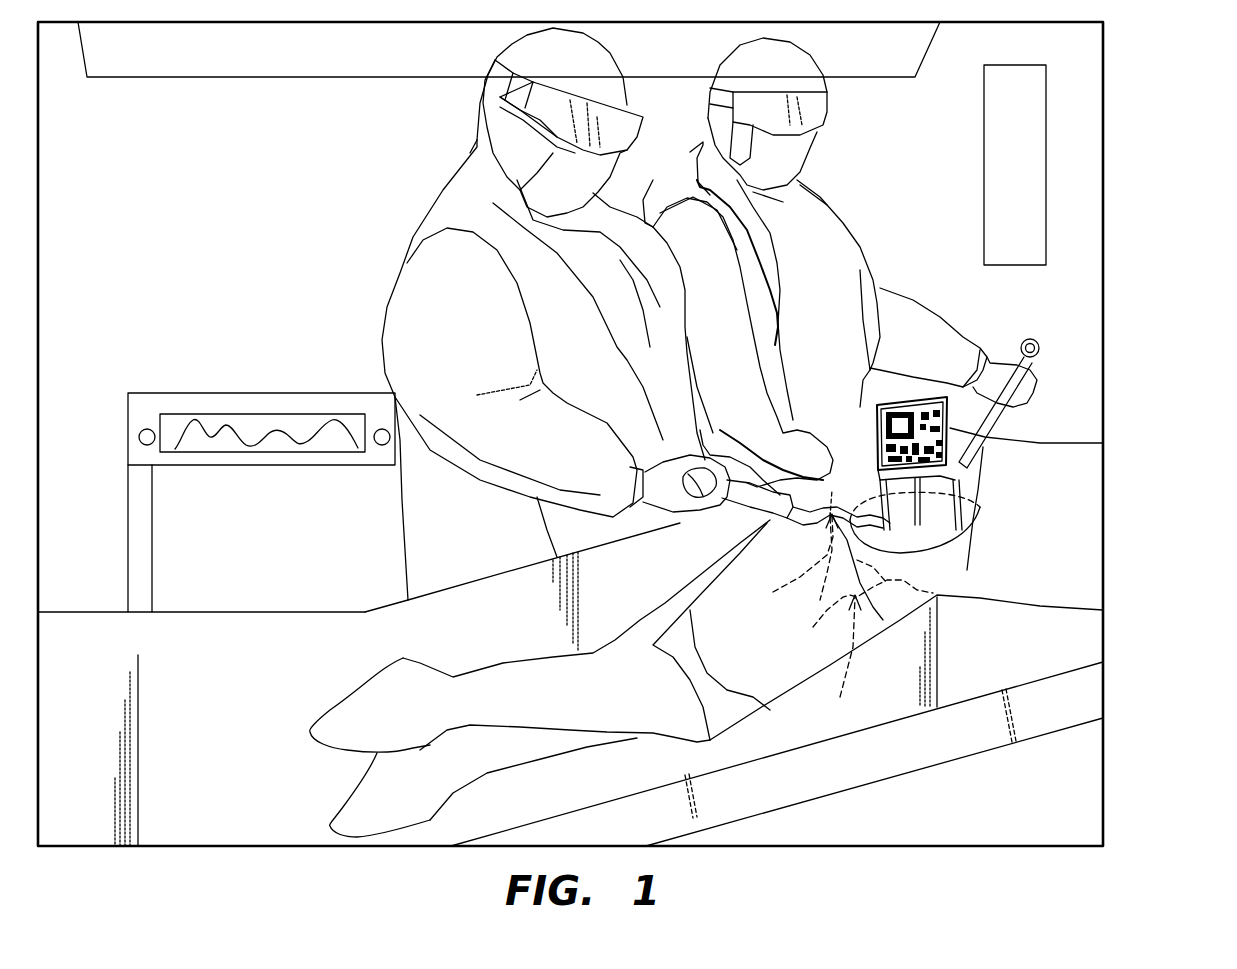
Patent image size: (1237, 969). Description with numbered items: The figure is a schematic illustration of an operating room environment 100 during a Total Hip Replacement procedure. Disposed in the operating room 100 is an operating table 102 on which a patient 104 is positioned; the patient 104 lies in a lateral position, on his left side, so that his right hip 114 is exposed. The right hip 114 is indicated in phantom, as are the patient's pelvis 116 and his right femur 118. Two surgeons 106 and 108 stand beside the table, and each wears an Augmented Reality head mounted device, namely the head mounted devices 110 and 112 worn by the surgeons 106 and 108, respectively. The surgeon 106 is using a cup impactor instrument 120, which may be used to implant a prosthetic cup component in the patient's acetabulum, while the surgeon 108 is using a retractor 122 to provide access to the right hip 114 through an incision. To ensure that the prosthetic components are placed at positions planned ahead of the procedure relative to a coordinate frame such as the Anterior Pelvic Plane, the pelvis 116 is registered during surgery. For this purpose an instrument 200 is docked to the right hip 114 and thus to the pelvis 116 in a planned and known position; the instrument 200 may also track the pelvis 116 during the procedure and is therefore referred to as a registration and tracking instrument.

The operating room environment 100 is at (1108, 62).
The operating table 102 is at (885, 780).
The patient 104 is at (1060, 440).
The surgeon 106 is at (413, 238).
The surgeon 108 is at (845, 222).
The head mounted device 110 is at (590, 88).
The head mounted device 112 is at (762, 102).
The right hip 114 is at (950, 580).
The pelvis 116 is at (782, 548).
The right femur 118 is at (826, 619).
The cup impactor instrument 120 is at (707, 538).
The retractor 122 is at (1027, 340).
The registration and tracking instrument 200 is at (992, 518).